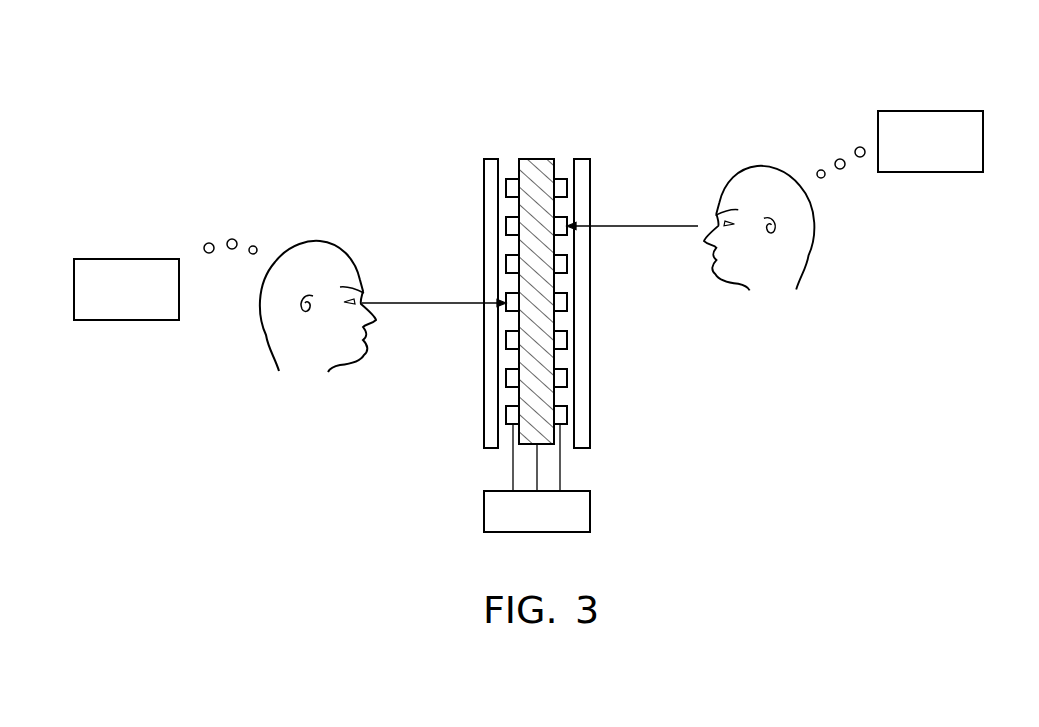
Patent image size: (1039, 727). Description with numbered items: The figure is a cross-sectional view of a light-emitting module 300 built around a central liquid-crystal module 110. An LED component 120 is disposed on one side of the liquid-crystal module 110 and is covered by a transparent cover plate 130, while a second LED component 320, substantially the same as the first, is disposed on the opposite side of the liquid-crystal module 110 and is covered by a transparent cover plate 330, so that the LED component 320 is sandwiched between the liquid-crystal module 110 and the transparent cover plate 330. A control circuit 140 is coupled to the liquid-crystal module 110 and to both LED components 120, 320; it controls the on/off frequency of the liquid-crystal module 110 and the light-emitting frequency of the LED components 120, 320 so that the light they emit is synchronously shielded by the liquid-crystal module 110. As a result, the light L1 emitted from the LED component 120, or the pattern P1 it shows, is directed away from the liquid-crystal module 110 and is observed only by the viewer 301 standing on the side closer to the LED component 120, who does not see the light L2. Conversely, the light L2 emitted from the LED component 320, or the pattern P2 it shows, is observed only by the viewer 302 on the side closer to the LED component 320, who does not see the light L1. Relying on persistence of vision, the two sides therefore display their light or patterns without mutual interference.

The light-emitting module 300 is at (147, 89).
The liquid-crystal module 110 is at (535, 177).
The LED component 120 is at (561, 182).
The LED component 320 is at (513, 182).
The transparent cover plate 130 is at (590, 191).
The transparent cover plate 330 is at (484, 191).
The control circuit 140 is at (518, 524).
The light L1 is at (567, 263).
The light L2 is at (506, 264).
The viewer 301 is at (762, 165).
The viewer 302 is at (315, 240).
The pattern P1 is at (931, 111).
The pattern P2 is at (126, 259).